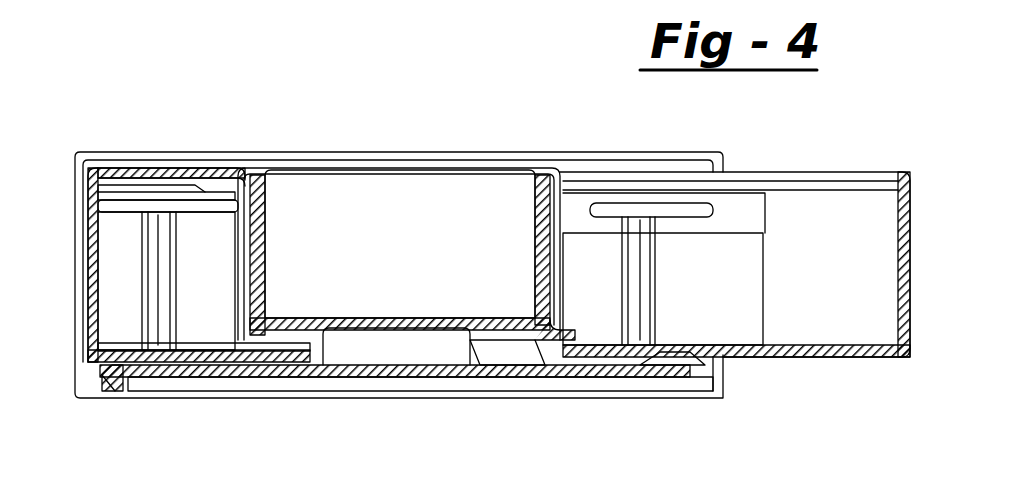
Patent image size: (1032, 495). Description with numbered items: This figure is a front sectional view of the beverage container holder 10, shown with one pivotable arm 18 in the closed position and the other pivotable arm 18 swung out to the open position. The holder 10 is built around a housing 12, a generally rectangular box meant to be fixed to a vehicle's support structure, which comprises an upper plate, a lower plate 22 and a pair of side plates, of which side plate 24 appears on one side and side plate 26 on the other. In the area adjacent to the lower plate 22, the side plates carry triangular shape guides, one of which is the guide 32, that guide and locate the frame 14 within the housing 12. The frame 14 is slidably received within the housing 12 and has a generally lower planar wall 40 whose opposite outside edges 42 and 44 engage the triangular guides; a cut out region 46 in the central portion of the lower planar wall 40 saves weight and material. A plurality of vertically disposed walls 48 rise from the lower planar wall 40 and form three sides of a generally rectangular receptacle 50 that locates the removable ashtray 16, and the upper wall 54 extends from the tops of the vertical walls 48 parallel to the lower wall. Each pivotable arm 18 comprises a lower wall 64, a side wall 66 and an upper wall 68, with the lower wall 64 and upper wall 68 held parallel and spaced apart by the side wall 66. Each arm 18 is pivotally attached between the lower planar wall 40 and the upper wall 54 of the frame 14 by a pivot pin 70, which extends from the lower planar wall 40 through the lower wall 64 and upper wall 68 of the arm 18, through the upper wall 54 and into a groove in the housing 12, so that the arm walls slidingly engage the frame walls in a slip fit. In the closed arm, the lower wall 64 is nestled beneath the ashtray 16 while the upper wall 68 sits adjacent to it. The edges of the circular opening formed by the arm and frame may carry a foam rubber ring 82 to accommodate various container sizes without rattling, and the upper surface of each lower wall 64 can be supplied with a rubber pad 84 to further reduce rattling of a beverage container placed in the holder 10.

The beverage container holder 10 is at (500, 112).
The housing 12 is at (710, 392).
The frame 14 is at (440, 378).
The ashtray 16 is at (262, 186).
The pivotable arm 18 is at (136, 234).
The lower plate 22 is at (256, 392).
The side plate 24 is at (76, 190).
The side plate 26 is at (736, 172).
The triangular shape guide 32 is at (103, 393).
The lower planar wall 40 is at (537, 378).
The outside edge 42 is at (123, 393).
The outside edge 44 is at (687, 378).
The cut out region 46 is at (330, 380).
The vertically disposed wall 48 is at (266, 246).
The rectangular receptacle 50 is at (418, 228).
The upper wall 54 is at (190, 205).
The lower wall 64 is at (200, 362).
The side wall 66 is at (92, 293).
The upper wall 68 is at (128, 190).
The pivot pin 70 is at (160, 268).
The foam rubber ring 82 is at (110, 207).
The rubber pad 84 is at (132, 362).